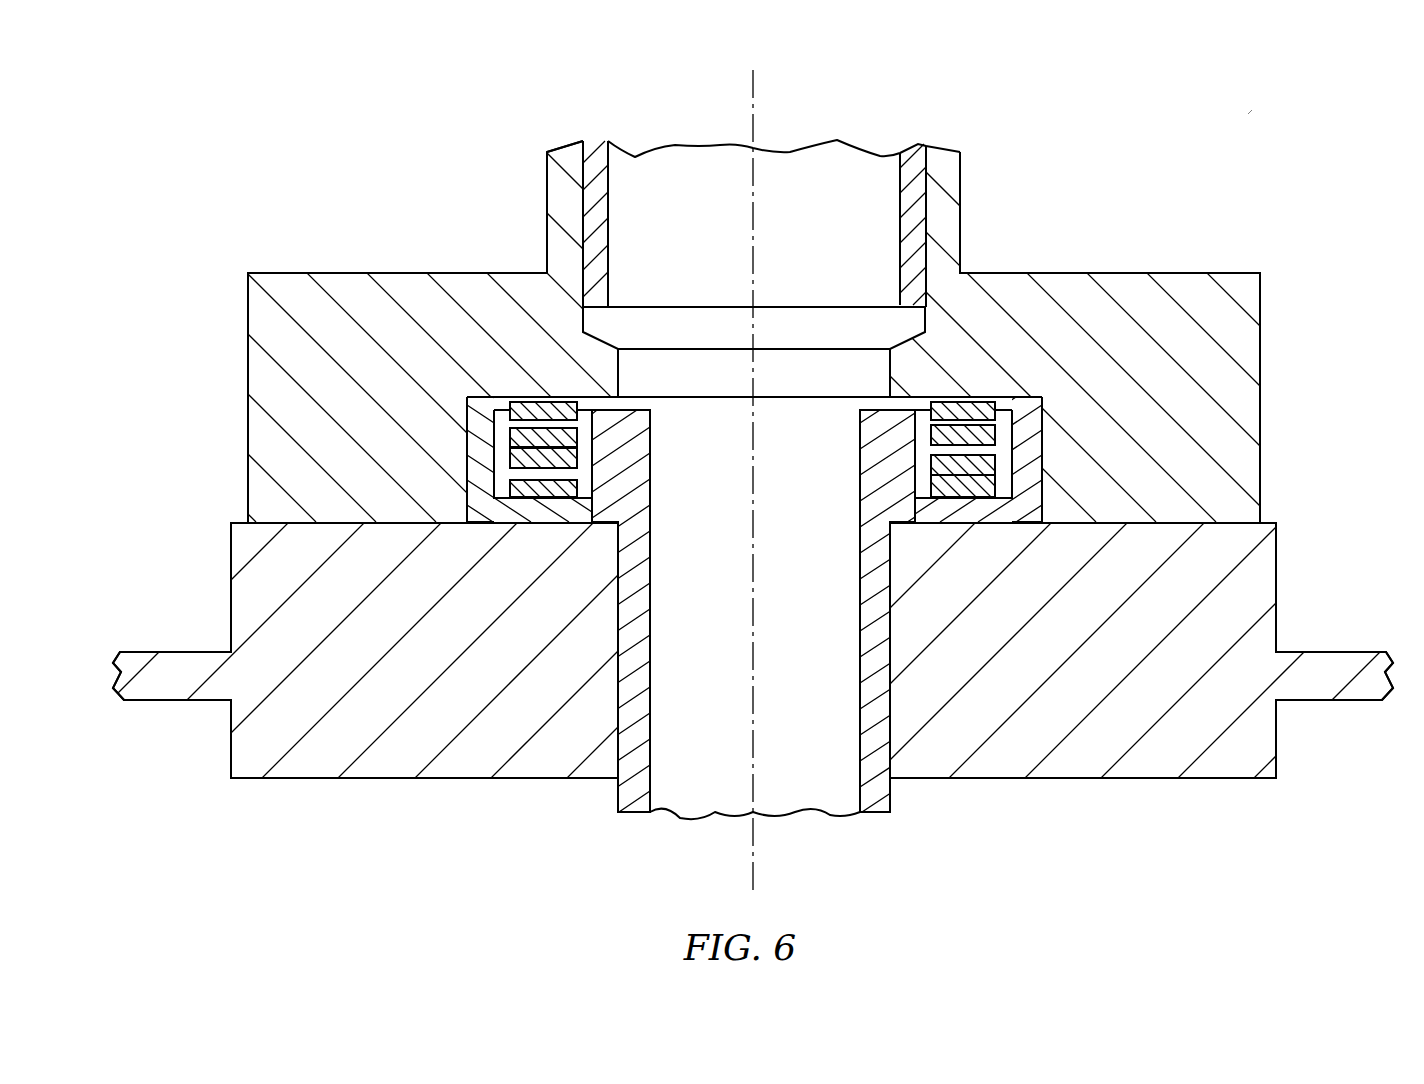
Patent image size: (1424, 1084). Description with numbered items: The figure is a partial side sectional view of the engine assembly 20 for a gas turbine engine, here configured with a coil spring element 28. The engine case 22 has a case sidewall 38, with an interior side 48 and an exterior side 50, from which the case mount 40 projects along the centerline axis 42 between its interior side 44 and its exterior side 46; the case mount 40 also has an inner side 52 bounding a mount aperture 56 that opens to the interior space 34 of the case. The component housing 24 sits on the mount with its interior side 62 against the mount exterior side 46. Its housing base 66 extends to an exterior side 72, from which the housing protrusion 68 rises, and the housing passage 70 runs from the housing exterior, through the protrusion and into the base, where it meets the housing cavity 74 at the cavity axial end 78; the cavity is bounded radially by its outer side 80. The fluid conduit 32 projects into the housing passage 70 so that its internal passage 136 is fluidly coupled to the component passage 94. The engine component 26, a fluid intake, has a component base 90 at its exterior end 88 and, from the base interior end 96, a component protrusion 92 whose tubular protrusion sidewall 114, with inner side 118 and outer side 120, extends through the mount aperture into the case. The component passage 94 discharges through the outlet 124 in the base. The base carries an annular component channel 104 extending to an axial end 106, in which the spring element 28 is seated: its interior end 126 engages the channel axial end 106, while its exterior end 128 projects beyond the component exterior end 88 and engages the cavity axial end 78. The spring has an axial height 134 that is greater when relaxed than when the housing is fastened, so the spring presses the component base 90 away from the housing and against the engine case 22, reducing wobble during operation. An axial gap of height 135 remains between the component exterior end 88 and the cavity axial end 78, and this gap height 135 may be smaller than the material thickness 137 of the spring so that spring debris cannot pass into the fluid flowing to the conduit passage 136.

The assembly 20 is at (1250, 112).
The engine case 22 is at (1355, 637).
The component housing 24 is at (1275, 290).
The engine component 26 is at (897, 822).
The spring element 28 is at (982, 393).
The fluid conduit 32 is at (905, 143).
The interior space 34 is at (1069, 888).
The case sidewall 38 is at (118, 668).
The case mount 40 is at (212, 788).
The centerline axis 42 is at (745, 84).
The interior side of the case mount 44 is at (272, 780).
The exterior side of the case mount 46 is at (276, 523).
The interior side of the case sidewall 48 is at (138, 702).
The exterior side of the case sidewall 50 is at (143, 650).
The inner side of the case mount 52 is at (630, 628).
The mount aperture 56 is at (897, 727).
The interior side of the component housing 62 is at (270, 528).
The housing base 66 is at (1272, 403).
The housing protrusion 68 is at (972, 180).
The housing passage 70 is at (930, 238).
The exterior side of the housing base 72 is at (297, 272).
The housing cavity 74 is at (1047, 461).
The axial end of the housing cavity 78 is at (480, 408).
The radial outer side of the housing cavity 80 is at (492, 523).
The exterior end of the engine component 88 is at (1035, 400).
The component base 90 is at (988, 530).
The component protrusion 92 is at (610, 822).
The component passage 94 is at (820, 780).
The interior end of the component base 96 is at (1010, 523).
The component channel 104 is at (507, 450).
The axial end of the component channel 106 is at (470, 485).
The protrusion sidewall 114 is at (630, 815).
The inner side of the protrusion sidewall 118 is at (648, 800).
The outer side of the protrusion sidewall 120 is at (618, 800).
The outlet from the component passage 124 is at (815, 400).
The interior end of the spring element 126 is at (527, 523).
The exterior end of the spring element 128 is at (570, 393).
The axial height of the spring element 134 is at (571, 502).
The axial height of the axial gap 135 is at (907, 393).
The internal passage 136 is at (837, 178).
The material thickness 137 is at (512, 378).